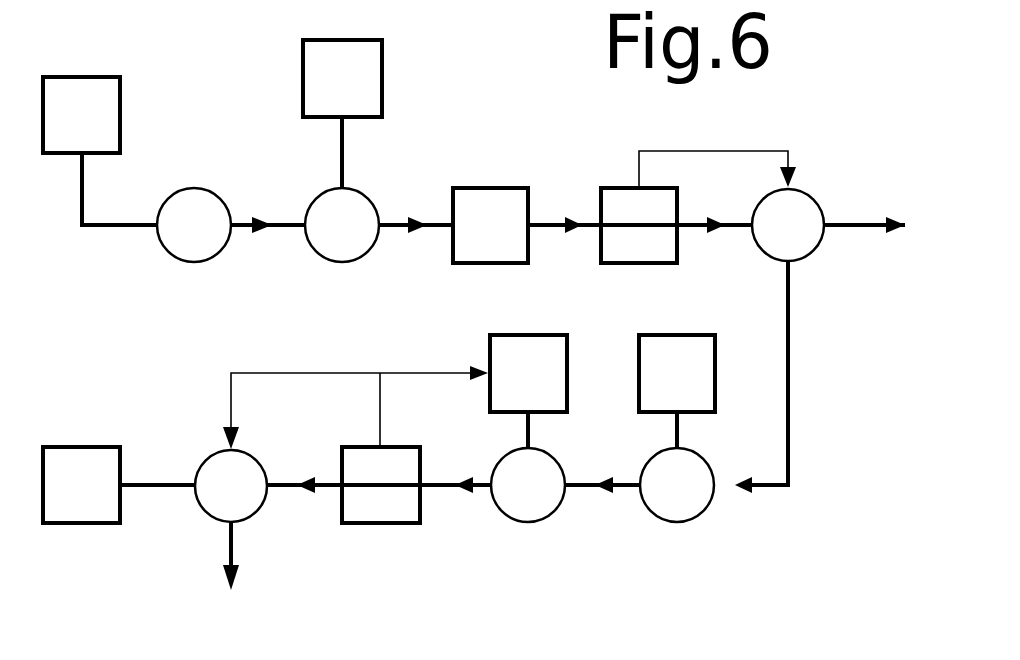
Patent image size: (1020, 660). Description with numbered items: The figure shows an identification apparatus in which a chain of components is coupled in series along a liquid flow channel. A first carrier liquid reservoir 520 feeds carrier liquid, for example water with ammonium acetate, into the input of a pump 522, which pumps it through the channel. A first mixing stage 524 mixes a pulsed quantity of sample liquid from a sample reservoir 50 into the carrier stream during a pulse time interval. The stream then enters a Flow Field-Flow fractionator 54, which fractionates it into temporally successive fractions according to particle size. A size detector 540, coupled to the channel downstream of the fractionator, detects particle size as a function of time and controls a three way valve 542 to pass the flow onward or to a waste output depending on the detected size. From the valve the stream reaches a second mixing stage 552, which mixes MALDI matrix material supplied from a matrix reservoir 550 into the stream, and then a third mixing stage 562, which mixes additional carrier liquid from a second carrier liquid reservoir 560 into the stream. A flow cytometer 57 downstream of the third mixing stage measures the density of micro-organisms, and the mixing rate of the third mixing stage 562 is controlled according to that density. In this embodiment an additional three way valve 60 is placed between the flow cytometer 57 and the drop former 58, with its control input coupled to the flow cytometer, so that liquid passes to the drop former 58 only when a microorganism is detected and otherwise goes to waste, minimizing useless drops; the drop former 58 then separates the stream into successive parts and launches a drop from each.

The first carrier liquid reservoir 520 is at (90, 77).
The pump 522 is at (193, 188).
The first mixing stage 524 is at (357, 262).
The sample reservoir 50 is at (382, 87).
The Flow Field-Flow fractionator 54 is at (500, 188).
The size detector 540 is at (612, 188).
The three way valve 542 is at (811, 253).
The second carrier liquid reservoir 560 is at (548, 335).
The matrix reservoir 550 is at (705, 335).
The drop former 58 is at (88, 447).
The flow cytometer 57 is at (355, 447).
The additional three way valve 60 is at (258, 512).
The third mixing stage 562 is at (555, 512).
The second mixing stage 552 is at (704, 512).